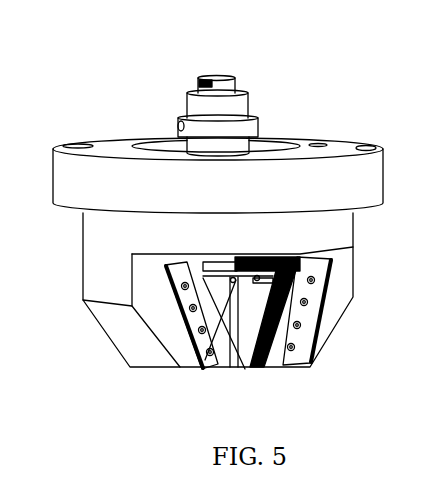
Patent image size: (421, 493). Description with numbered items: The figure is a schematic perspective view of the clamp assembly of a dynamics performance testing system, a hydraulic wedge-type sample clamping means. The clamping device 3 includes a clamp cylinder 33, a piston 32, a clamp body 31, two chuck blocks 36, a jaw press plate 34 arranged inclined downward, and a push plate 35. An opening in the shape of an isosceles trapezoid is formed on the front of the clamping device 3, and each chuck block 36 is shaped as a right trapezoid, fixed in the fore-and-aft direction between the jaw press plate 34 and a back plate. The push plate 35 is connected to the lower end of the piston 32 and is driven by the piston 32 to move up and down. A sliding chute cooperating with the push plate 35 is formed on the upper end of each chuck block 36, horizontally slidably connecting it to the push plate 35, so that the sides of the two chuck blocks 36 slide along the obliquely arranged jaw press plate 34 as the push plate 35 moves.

The clamping device 3 is at (323, 110).
The clamp body 31 is at (120, 158).
The piston 32 is at (227, 77).
The clamp cylinder 33 is at (247, 107).
The jaw press plate 34 is at (305, 315).
The push plate 35 is at (205, 368).
The chuck block 36 is at (240, 335).